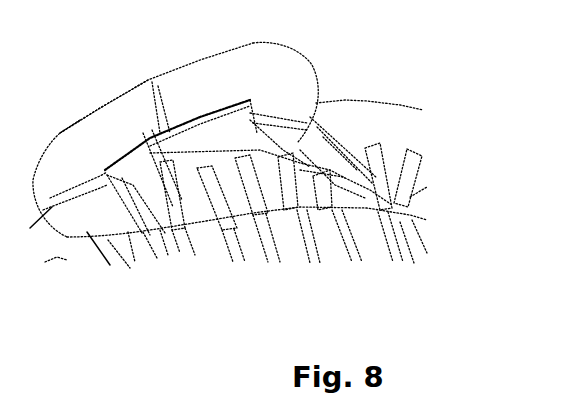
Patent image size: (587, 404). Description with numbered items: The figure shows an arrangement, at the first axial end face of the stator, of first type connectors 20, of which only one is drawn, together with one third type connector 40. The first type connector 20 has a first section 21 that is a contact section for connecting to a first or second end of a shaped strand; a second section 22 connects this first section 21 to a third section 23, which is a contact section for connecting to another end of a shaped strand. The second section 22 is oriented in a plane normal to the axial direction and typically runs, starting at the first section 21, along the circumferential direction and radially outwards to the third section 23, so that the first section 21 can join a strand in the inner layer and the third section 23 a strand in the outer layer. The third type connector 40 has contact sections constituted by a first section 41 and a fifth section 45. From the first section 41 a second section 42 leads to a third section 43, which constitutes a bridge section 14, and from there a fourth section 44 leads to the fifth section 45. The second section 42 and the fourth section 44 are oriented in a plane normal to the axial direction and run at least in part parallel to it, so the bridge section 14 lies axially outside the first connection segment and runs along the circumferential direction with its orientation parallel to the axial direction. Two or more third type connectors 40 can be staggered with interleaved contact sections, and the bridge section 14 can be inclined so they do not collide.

The bridge section 14 is at (189, 77).
The third section 43 is at (189, 77).
The third type connector 40 is at (75, 109).
The first type connector 20 is at (366, 125).
The first section 21 is at (377, 193).
The second section 22 is at (238, 145).
The third section 23 is at (176, 182).
The first section 41 is at (343, 190).
The second section 42 is at (298, 143).
The fourth section 44 is at (80, 212).
The fifth section 45 is at (138, 243).